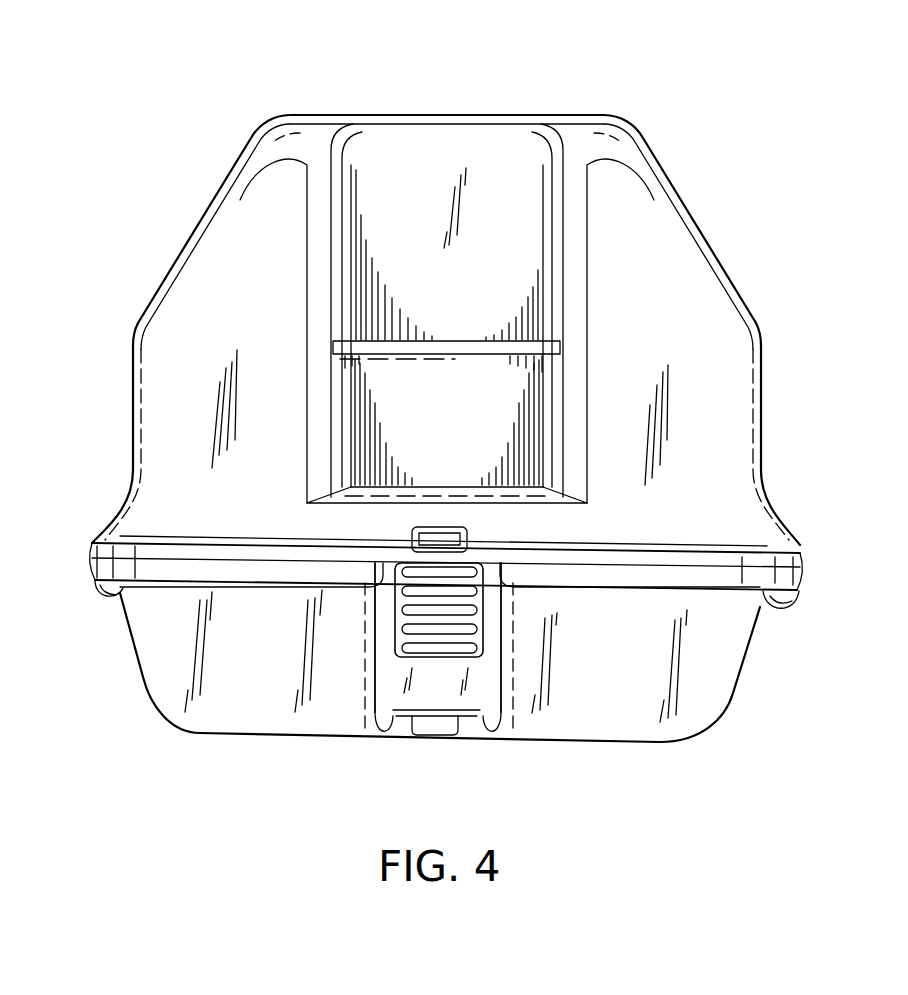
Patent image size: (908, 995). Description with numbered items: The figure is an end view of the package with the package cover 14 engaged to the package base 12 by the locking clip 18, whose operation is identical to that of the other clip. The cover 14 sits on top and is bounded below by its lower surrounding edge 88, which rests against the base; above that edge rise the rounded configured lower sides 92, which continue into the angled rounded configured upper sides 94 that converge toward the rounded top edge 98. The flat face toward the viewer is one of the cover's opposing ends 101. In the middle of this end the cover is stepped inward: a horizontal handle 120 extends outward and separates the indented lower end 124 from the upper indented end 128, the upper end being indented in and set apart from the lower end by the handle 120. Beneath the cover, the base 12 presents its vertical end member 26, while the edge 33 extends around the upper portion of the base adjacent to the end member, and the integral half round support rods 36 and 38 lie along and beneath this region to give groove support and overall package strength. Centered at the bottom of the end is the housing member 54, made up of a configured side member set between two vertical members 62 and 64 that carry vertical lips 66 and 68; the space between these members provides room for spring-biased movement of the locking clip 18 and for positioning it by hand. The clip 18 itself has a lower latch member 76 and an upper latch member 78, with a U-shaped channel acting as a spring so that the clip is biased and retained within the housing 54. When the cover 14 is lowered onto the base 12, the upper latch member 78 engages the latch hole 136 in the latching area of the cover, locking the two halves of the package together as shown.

The package base 12 is at (775, 659).
The package cover 14 is at (722, 240).
The locking clip 18 is at (476, 602).
The vertical end member 26 is at (265, 664).
The edge 33 is at (800, 576).
The half round support rod 36 is at (95, 583).
The half round support rod 38 is at (797, 600).
The housing member 54 is at (393, 757).
The vertical member 62 is at (363, 683).
The vertical member 64 is at (512, 713).
The vertical lip 66 is at (375, 737).
The vertical lip 68 is at (484, 737).
The lower latch member 76 is at (440, 735).
The upper latch member 78 is at (455, 538).
The lower surrounding edge 88 is at (798, 560).
The rounded configured lower side 92 is at (763, 400).
The angled rounded configured upper side 94 is at (673, 182).
The rounded top edge 98 is at (443, 114).
The opposing end 101 is at (262, 312).
The handle 120 is at (458, 352).
The indented lower end 124 is at (467, 430).
The upper indented end 128 is at (429, 205).
The latch hole 136 is at (412, 534).